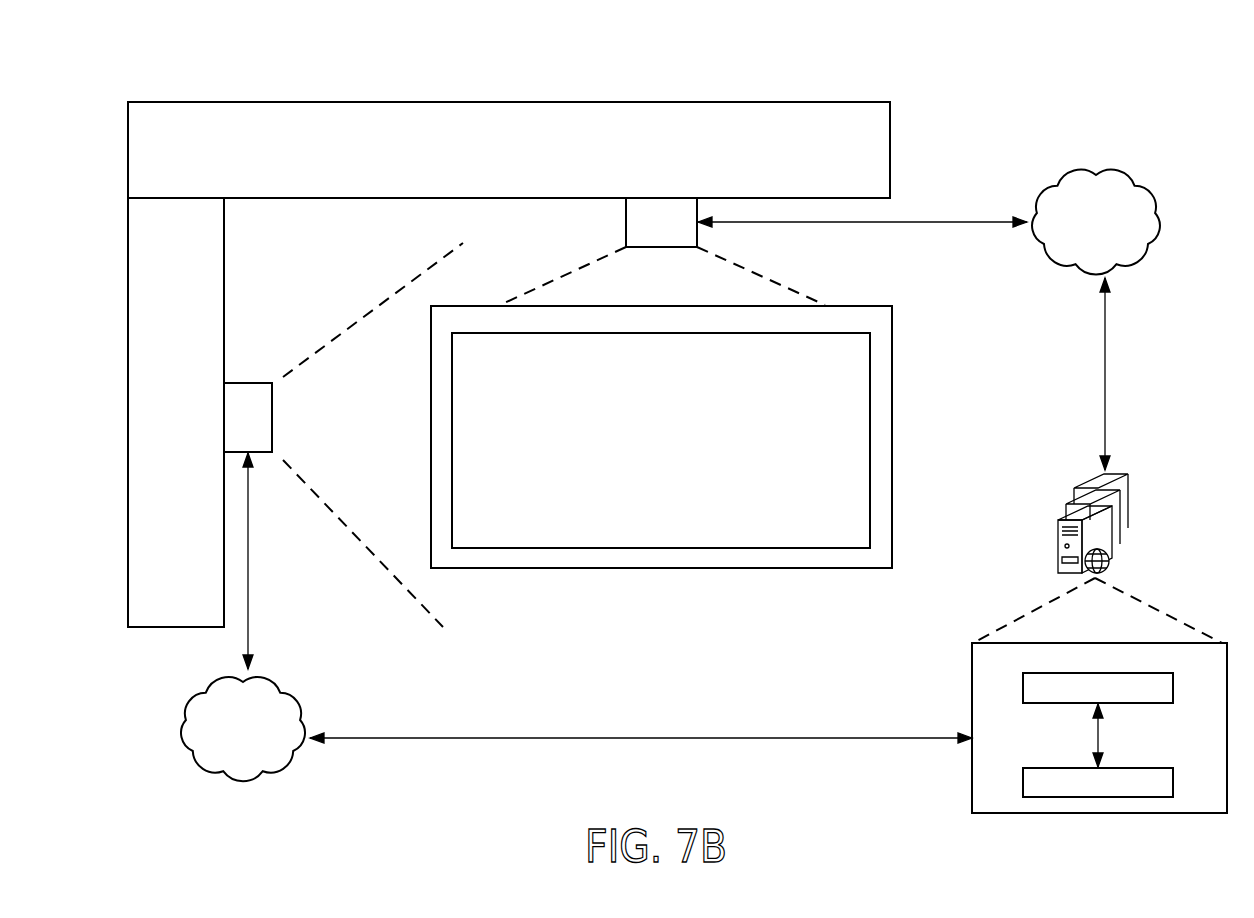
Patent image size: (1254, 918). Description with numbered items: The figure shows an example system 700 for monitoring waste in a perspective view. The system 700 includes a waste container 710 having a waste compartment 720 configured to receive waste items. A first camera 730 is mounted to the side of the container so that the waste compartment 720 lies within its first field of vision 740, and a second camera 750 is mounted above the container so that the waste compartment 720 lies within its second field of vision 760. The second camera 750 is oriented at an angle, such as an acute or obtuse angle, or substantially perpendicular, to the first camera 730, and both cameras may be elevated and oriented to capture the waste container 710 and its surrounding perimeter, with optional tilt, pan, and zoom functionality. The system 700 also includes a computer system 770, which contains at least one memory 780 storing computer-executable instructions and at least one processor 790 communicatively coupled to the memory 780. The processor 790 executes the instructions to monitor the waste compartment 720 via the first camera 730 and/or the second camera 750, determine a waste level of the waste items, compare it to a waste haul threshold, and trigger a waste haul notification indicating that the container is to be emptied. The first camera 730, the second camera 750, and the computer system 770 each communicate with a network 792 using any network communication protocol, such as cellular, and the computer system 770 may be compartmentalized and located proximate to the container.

The system 700 is at (1158, 49).
The waste container 710 is at (905, 367).
The waste compartment 720 is at (661, 440).
The first camera 730 is at (248, 418).
The first field of vision 740 is at (288, 378).
The second camera 750 is at (661, 213).
The second field of vision 760 is at (716, 267).
The computer system 770 is at (1153, 572).
The memory 780 is at (1150, 768).
The processor 790 is at (1150, 703).
The network 792 is at (670, 476).